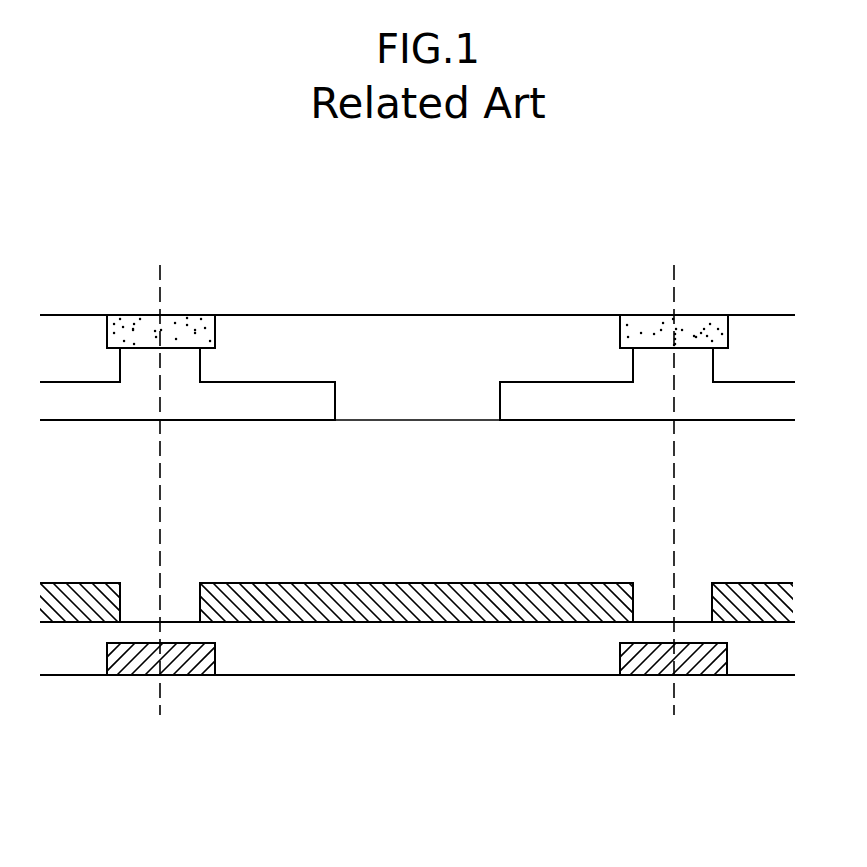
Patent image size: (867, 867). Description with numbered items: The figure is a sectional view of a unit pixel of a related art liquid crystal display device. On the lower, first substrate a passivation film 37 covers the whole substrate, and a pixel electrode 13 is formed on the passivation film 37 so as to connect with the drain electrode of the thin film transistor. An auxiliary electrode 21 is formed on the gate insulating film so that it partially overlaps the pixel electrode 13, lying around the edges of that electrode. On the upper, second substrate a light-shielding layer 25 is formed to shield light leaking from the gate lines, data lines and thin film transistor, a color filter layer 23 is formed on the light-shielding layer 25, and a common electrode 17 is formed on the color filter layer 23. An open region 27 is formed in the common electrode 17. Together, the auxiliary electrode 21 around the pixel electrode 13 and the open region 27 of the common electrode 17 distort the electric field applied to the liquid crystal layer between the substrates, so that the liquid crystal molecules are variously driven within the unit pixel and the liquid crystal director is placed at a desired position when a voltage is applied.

The pixel electrode 13 is at (478, 588).
The common electrode 17 is at (700, 413).
The auxiliary electrode 21 is at (638, 675).
The color filter layer 23 is at (285, 337).
The light-shielding layer 25 is at (198, 336).
The open region 27 is at (413, 412).
The passivation film 37 is at (353, 645).